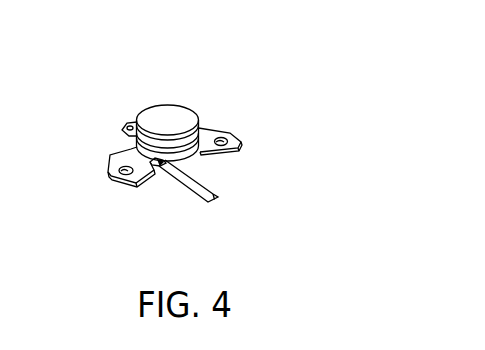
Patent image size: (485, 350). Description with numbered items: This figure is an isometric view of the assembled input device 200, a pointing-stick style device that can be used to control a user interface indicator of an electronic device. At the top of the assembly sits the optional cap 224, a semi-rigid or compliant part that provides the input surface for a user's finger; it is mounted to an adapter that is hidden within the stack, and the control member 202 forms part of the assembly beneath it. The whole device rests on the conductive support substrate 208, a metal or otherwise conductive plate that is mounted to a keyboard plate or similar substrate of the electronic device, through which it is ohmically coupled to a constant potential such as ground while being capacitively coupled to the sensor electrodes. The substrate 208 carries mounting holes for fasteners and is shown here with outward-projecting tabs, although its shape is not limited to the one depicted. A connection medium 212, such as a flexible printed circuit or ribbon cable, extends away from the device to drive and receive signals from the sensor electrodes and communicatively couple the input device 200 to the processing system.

The input device 200 is at (304, 66).
The control member 202 is at (152, 168).
The conductive support substrate 208 is at (122, 158).
The connection medium 212 is at (217, 193).
The cap 224 is at (181, 117).